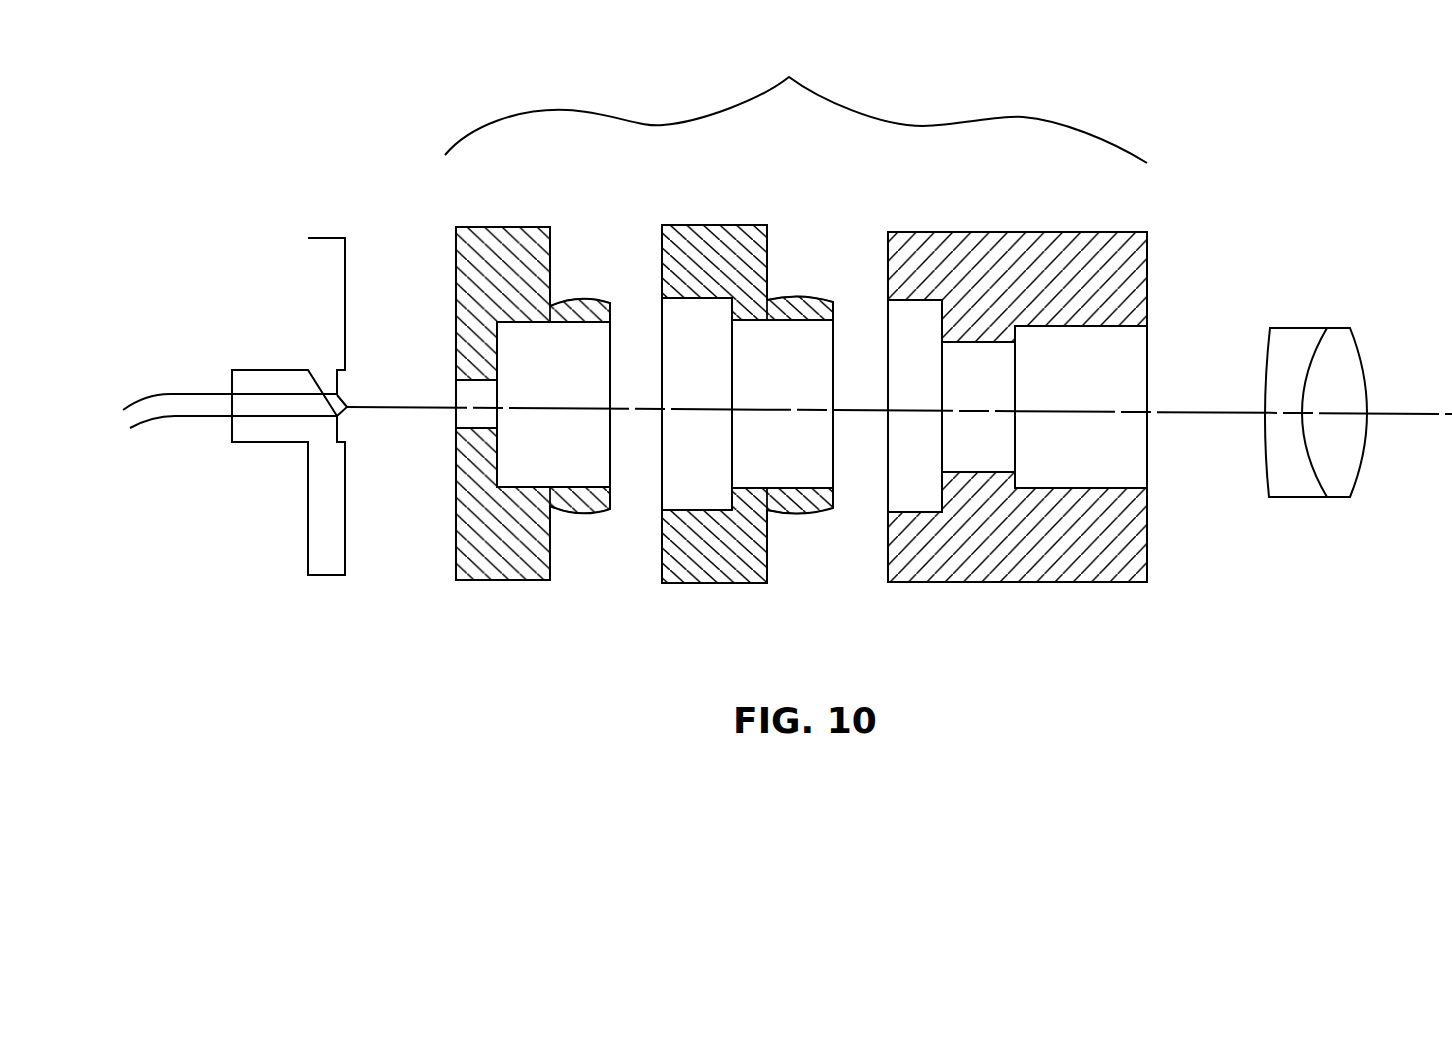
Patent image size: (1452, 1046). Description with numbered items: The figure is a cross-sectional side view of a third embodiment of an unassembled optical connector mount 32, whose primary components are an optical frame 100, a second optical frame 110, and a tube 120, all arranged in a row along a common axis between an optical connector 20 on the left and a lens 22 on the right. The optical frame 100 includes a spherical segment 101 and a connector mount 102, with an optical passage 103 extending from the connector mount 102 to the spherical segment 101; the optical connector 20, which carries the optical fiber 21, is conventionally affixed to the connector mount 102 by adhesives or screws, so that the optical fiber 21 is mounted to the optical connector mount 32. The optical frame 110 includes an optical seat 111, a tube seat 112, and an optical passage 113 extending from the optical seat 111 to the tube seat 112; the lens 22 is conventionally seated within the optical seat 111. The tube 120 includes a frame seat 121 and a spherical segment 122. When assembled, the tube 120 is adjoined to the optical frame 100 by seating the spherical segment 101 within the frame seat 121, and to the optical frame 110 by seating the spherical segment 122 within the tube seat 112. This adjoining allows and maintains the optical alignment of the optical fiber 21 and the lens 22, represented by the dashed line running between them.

The optical connector 20 is at (270, 406).
The optical fiber 21 is at (347, 407).
The lens 22 is at (1360, 362).
The optical connector mount 32 is at (796, 105).
The optical frame 100 is at (487, 393).
The spherical segment 101 is at (586, 505).
The connector mount 102 is at (458, 542).
The optical passage 103 is at (466, 393).
The optical frame 110 is at (1042, 403).
The optical seat 111 is at (1130, 302).
The tube seat 112 is at (910, 560).
The optical passage 113 is at (998, 438).
The tube 120 is at (737, 405).
The frame seat 121 is at (680, 565).
The spherical segment 122 is at (795, 512).